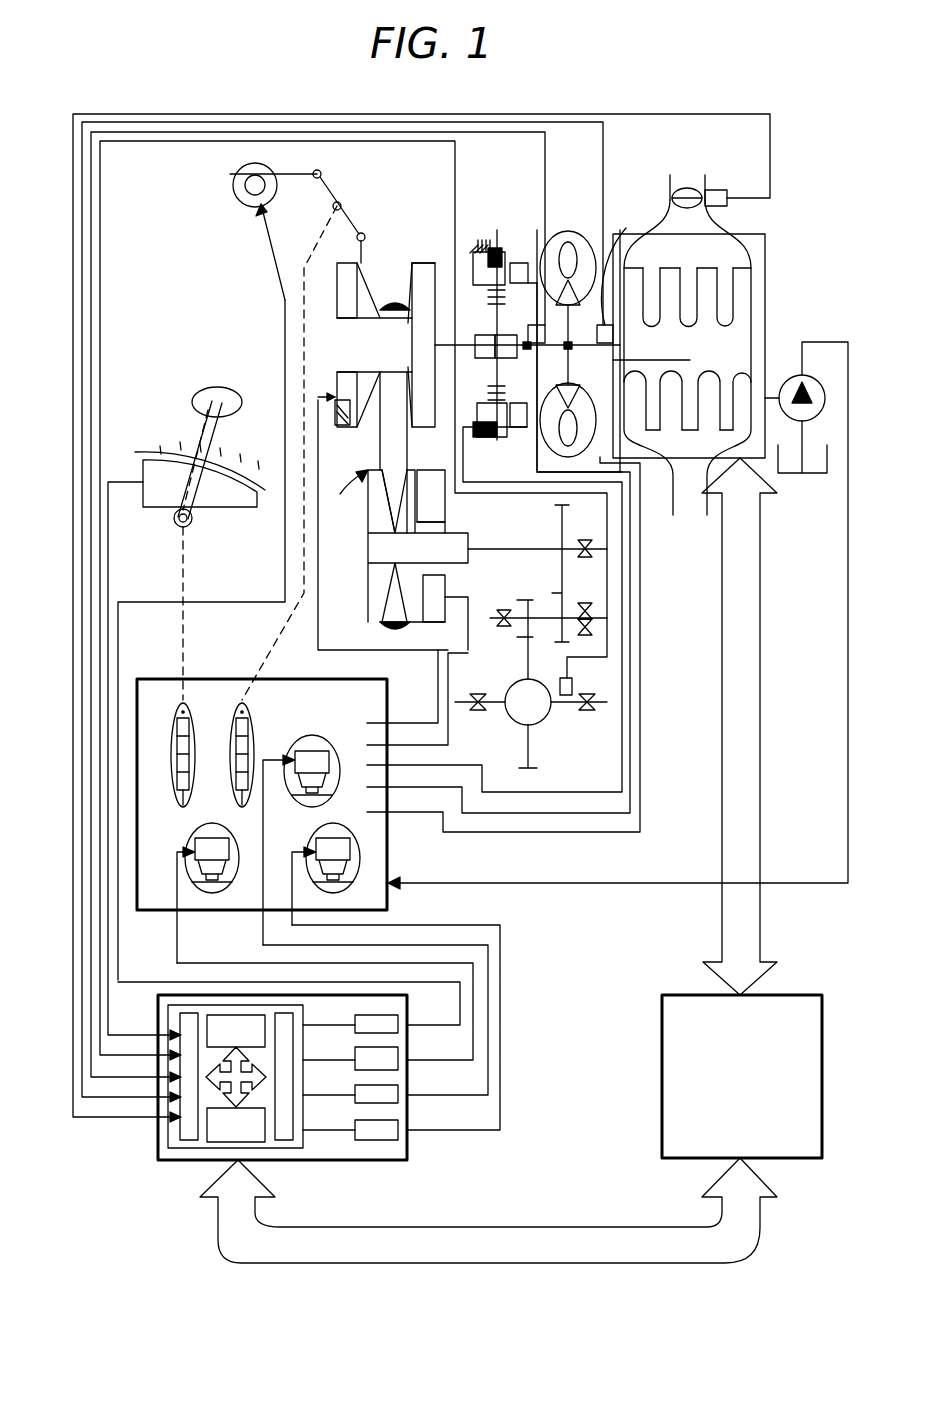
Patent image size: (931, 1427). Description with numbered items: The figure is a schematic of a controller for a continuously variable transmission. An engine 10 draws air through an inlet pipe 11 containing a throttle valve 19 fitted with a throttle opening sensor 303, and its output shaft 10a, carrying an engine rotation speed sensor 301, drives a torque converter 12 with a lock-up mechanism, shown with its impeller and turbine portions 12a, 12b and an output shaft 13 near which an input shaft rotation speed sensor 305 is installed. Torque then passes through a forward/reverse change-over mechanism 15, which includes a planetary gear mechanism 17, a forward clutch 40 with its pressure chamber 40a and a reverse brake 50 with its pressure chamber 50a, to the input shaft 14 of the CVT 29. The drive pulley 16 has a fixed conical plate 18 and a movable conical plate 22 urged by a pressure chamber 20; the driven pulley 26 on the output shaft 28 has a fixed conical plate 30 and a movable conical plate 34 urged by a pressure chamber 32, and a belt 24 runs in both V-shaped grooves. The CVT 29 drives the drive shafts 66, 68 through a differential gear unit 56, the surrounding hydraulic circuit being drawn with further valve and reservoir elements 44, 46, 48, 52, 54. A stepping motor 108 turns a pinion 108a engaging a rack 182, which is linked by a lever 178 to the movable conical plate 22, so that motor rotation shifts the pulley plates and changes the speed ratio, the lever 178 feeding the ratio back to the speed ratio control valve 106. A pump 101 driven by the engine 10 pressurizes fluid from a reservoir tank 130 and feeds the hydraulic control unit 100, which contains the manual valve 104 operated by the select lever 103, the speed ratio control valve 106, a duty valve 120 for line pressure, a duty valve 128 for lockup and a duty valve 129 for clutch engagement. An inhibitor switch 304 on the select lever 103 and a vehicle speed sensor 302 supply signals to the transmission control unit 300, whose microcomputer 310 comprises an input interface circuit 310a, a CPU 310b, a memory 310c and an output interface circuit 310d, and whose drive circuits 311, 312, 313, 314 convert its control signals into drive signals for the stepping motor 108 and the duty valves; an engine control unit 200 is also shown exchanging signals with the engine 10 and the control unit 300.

The engine 10 is at (765, 246).
The output shaft 10a is at (613, 340).
The inlet pipe 11 is at (745, 300).
The torque converter 12 is at (566, 233).
The pump impeller 12a is at (578, 252).
The turbine runner 12b is at (635, 396).
The output shaft 13 is at (536, 344).
The input shaft 14 is at (470, 345).
The forward/reverse change-over mechanism 15 is at (482, 240).
The drive pulley 16 is at (405, 250).
The planetary gear mechanism 17 is at (510, 290).
The fixed conical plate 18 is at (424, 262).
The throttle valve 19 is at (688, 190).
The pressure chamber 20 is at (343, 425).
The movable conical plate 22 is at (364, 252).
The belt 24 is at (392, 300).
The driven pulley 26 is at (375, 629).
The output shaft 28 is at (522, 548).
The continuously variable transmission 29 is at (346, 501).
The fixed conical plate 30 is at (380, 540).
The pressure chamber 32 is at (435, 590).
The movable conical plate 34 is at (440, 533).
The forward clutch 40 is at (514, 262).
The pressure chamber 40a is at (505, 426).
The oil reservoir 44 is at (532, 745).
The pressure regulating valve 46 is at (585, 540).
The line pressure valve 48 is at (585, 604).
The reverse brake 50 is at (496, 245).
The pressure chamber 50a is at (478, 438).
The relief valve 52 is at (587, 638).
The control valve 54 is at (512, 608).
The differential gear unit 56 is at (515, 680).
The drive shaft 66 is at (470, 710).
The drive shaft 68 is at (594, 710).
The hydraulic control unit 100 is at (392, 866).
The pump 101 is at (812, 372).
The select lever 103 is at (222, 388).
The manual valve 104 is at (207, 735).
The speed ratio control valve 106 is at (258, 735).
The stepping motor 108 is at (240, 210).
The pinion 108a is at (246, 190).
The duty valve for line pressure control 120 is at (208, 840).
The duty valve for lockup control 128 is at (320, 750).
The duty valve for clutch engaging control 129 is at (330, 840).
The reservoir tank 130 is at (815, 474).
The lever 178 is at (336, 202).
The rack 182 is at (316, 170).
The engine control unit 200 is at (822, 1010).
The transmission control unit 300 is at (410, 1160).
The engine rotation speed sensor 301 is at (627, 264).
The vehicle speed sensor 302 is at (359, 598).
The throttle opening sensor 303 is at (718, 190).
The inhibitor switch 304 is at (228, 508).
The input shaft rotation speed sensor 305 is at (448, 410).
The microcomputer 310 is at (168, 1018).
The input interface circuit 310a is at (185, 1150).
The central processing unit 310b is at (235, 1012).
The memory 310c is at (258, 1148).
The output interface circuit 310d is at (290, 1150).
The drive circuit 311 is at (372, 1015).
The drive circuit 312 is at (382, 1055).
The drive circuit 313 is at (362, 1095).
The drive circuit 314 is at (380, 1132).